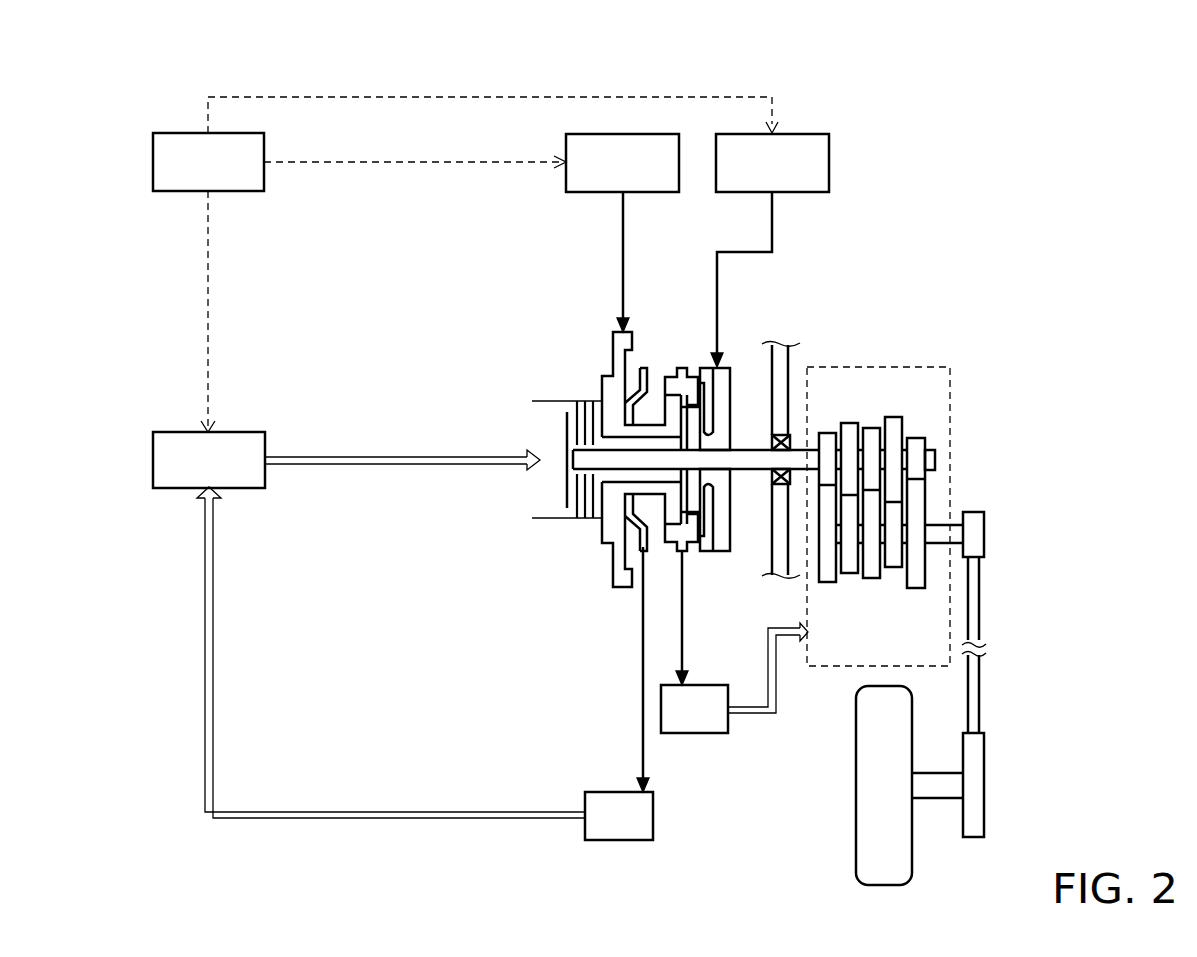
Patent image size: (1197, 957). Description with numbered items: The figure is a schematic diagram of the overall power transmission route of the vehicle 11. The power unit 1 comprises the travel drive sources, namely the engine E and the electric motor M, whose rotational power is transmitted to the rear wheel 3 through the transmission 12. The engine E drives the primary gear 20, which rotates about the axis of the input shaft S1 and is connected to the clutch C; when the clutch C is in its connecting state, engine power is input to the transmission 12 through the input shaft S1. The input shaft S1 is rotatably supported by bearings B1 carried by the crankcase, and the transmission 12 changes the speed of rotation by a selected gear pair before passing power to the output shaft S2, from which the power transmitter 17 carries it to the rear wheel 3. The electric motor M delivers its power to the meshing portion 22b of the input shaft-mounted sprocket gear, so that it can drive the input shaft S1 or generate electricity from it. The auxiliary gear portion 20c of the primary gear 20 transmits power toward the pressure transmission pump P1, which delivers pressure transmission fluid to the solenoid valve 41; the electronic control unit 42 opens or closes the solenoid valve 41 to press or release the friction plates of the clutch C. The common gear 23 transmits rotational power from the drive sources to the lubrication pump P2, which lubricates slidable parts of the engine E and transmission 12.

The power unit 1 is at (810, 106).
The vehicle 11 is at (1054, 176).
The transmission 12 is at (955, 390).
The rear wheel 3 is at (865, 852).
The power transmitter 17 is at (982, 700).
The primary gear 20 is at (613, 342).
The auxiliary gear portion 20c is at (645, 364).
The meshing portion 22b is at (713, 556).
The common gear 23 is at (684, 366).
The solenoid valve 41 is at (153, 458).
The ECU 42 is at (153, 166).
The bearings B1 is at (770, 436).
The clutch C is at (567, 412).
The engine E is at (597, 192).
The electric motor M is at (829, 163).
The pressure transmission pump P1 is at (617, 840).
The lubrication pump P2 is at (693, 733).
The input shaft S1 is at (936, 453).
The output shaft S2 is at (960, 535).